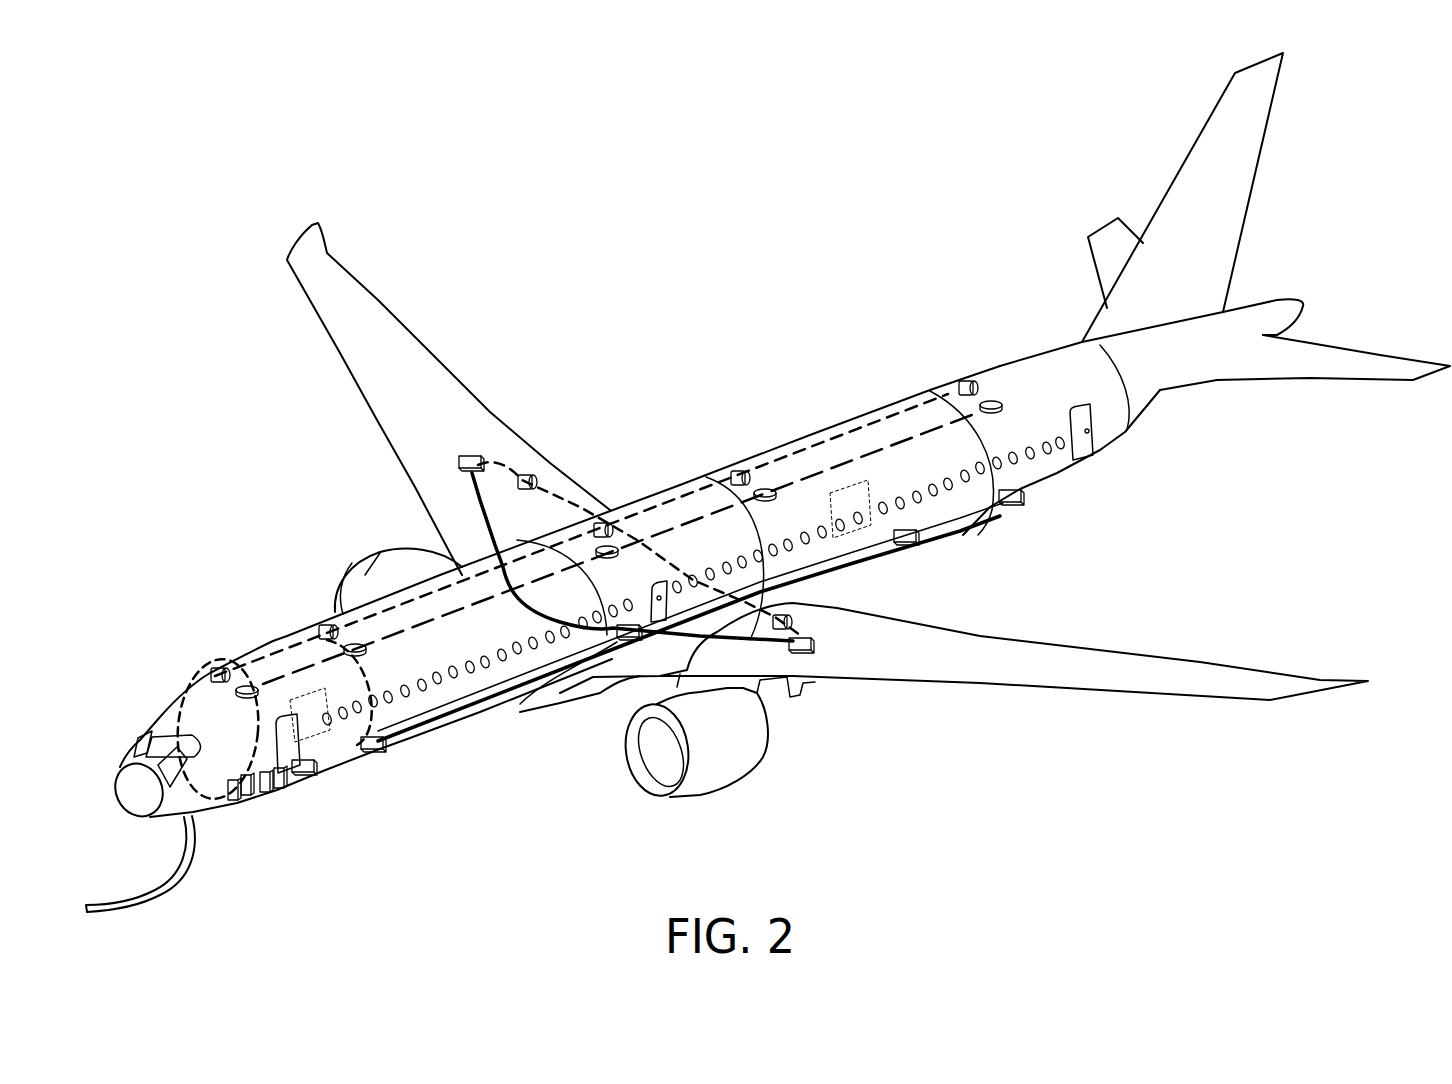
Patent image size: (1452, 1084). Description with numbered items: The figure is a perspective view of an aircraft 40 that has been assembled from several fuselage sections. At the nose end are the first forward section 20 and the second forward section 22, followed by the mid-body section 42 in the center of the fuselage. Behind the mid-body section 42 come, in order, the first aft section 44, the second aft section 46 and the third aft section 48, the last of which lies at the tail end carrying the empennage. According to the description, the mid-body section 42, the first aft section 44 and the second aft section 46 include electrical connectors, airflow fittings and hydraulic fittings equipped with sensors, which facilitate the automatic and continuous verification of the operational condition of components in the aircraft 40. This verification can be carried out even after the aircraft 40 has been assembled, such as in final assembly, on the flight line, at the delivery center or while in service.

The aircraft 40 is at (657, 194).
The mid-body section 42 is at (668, 487).
The first aft section 44 is at (833, 422).
The second aft section 46 is at (1025, 358).
The third aft section 48 is at (1280, 297).
The first forward section 20 is at (257, 650).
The second forward section 22 is at (313, 627).